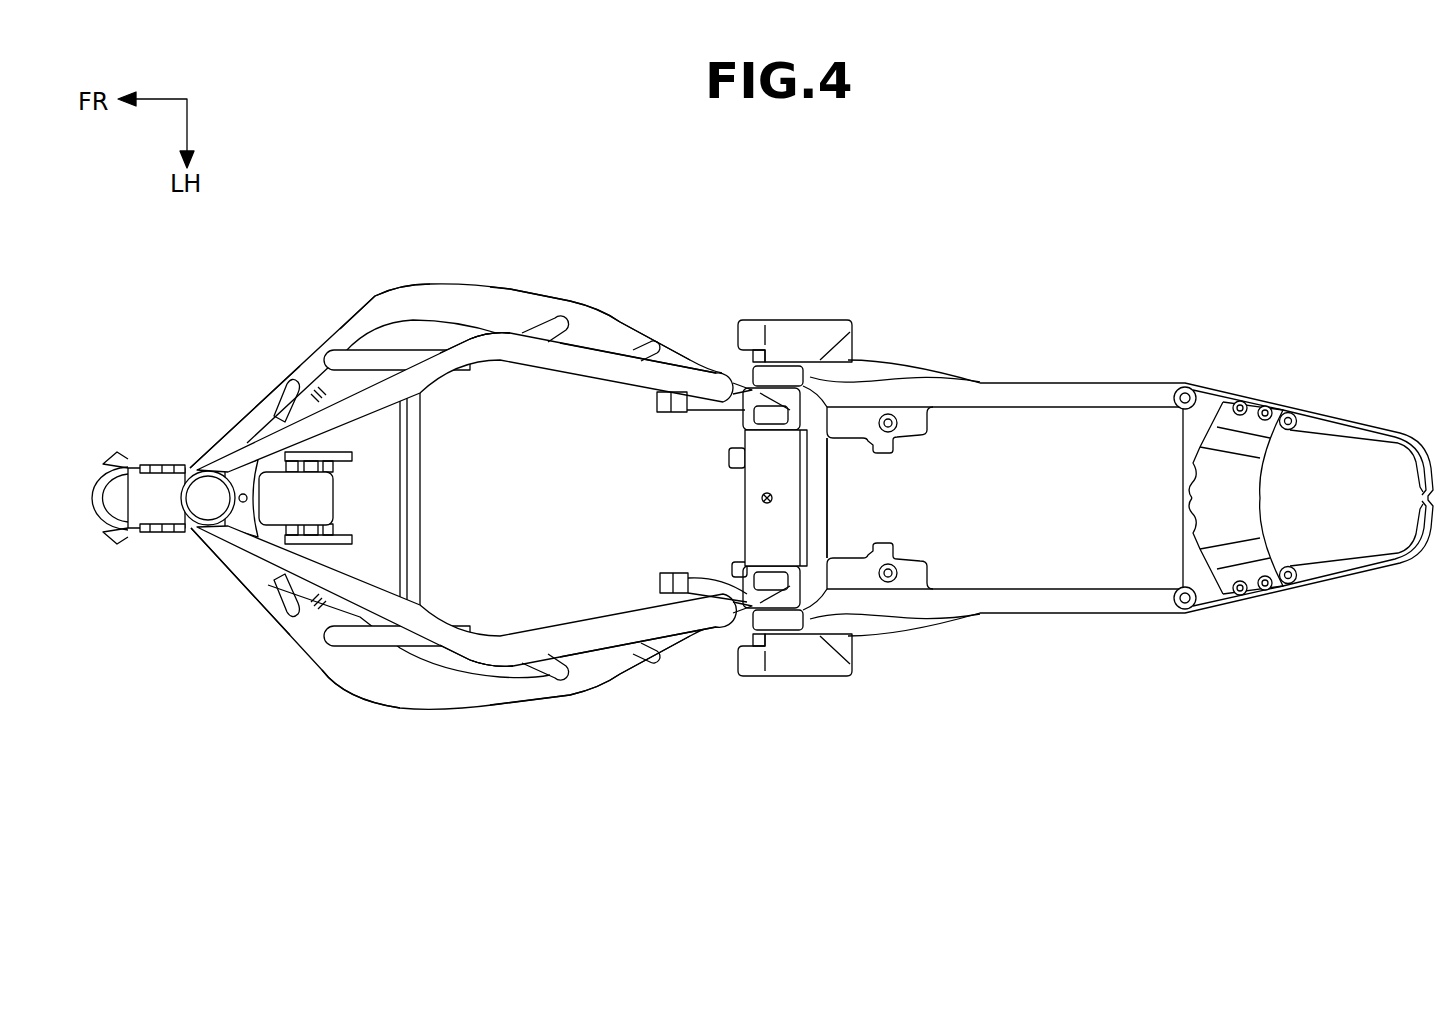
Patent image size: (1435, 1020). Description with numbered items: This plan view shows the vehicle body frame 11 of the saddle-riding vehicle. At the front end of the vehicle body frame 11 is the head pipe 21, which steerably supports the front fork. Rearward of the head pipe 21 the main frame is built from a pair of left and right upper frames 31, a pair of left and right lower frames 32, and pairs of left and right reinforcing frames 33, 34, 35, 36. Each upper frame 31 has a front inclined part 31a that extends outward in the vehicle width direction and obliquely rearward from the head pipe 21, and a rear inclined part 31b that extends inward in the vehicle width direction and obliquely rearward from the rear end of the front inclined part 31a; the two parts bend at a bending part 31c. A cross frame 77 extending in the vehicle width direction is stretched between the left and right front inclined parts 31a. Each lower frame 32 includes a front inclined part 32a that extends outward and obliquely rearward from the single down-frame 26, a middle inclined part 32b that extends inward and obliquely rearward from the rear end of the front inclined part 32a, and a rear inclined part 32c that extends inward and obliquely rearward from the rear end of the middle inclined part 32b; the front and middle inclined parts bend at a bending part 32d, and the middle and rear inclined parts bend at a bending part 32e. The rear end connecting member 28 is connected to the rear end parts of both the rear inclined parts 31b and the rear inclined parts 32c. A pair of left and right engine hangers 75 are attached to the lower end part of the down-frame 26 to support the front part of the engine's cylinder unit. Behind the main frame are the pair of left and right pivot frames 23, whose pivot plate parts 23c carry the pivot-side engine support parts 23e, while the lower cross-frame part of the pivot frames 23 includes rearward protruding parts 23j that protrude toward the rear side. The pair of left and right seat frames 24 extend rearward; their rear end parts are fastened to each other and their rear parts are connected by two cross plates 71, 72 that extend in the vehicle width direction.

The vehicle body frame 11 is at (277, 245).
The head pipe 21 is at (158, 480).
The pivot frame 23 is at (795, 479).
The pivot plate part 23c is at (828, 332).
The pivot-side engine support part 23e is at (674, 392).
The rearward protruding part 23j is at (854, 436).
The seat frame 24 is at (1067, 392).
The down-frame 26 is at (278, 508).
The rear end connecting member 28 is at (742, 384).
The upper frame 31 is at (302, 380).
The front inclined part 31a is at (346, 400).
The rear inclined part 31b is at (598, 350).
The bending part 31c is at (486, 328).
The lower frame 32 is at (428, 284).
The front inclined part 32a is at (248, 418).
The middle inclined part 32b is at (512, 308).
The rear inclined part 32c is at (626, 336).
The bending part 32d is at (384, 316).
The bending part 32e is at (584, 320).
The reinforcing frame 33 is at (271, 396).
The reinforcing frame 34 is at (356, 334).
The reinforcing frame 35 is at (556, 316).
The reinforcing frame 36 is at (676, 388).
The cross plate 71 is at (1250, 480).
The cross plate 72 is at (1192, 562).
The engine hanger 75 is at (320, 398).
The cross frame 77 is at (422, 572).